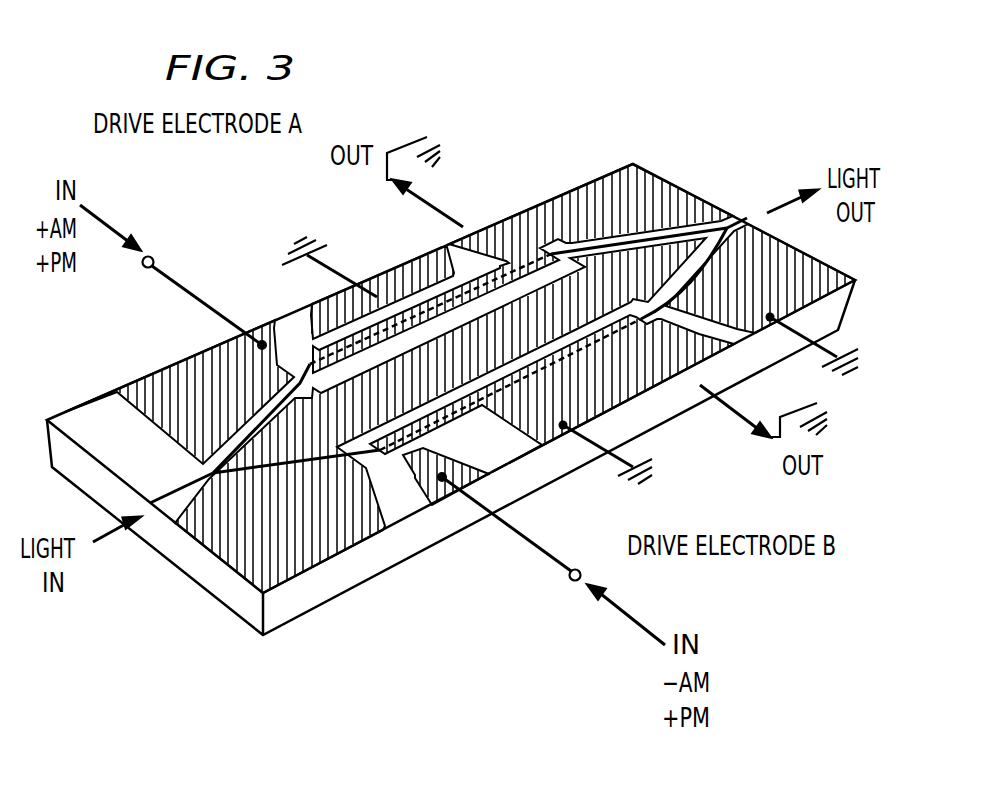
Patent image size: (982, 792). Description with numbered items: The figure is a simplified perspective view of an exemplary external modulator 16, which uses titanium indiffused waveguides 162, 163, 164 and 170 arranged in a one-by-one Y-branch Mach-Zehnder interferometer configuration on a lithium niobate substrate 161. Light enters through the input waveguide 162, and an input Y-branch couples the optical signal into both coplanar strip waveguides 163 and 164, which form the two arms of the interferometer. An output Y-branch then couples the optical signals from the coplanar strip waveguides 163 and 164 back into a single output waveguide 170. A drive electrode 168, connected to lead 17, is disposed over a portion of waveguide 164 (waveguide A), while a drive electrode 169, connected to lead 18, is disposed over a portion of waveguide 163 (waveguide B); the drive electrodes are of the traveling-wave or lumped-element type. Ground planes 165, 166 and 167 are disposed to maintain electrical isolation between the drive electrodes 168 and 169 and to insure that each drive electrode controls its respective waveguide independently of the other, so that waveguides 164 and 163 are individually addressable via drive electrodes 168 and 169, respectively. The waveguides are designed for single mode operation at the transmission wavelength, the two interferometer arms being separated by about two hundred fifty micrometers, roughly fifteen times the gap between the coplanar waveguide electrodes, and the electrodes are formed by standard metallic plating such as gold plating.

The external modulator 16 is at (382, 661).
The lead 17 is at (168, 282).
The lead 18 is at (546, 558).
The lithium niobate substrate 161 is at (68, 468).
The waveguide 162 is at (173, 507).
The coplanar strip waveguide 163 is at (220, 488).
The coplanar strip waveguide 164 is at (205, 477).
The ground plane 165 is at (377, 285).
The ground plane 166 is at (553, 433).
The ground plane 167 is at (560, 202).
The drive electrode 168 is at (488, 236).
The drive electrode 169 is at (663, 380).
The waveguide 170 is at (733, 226).